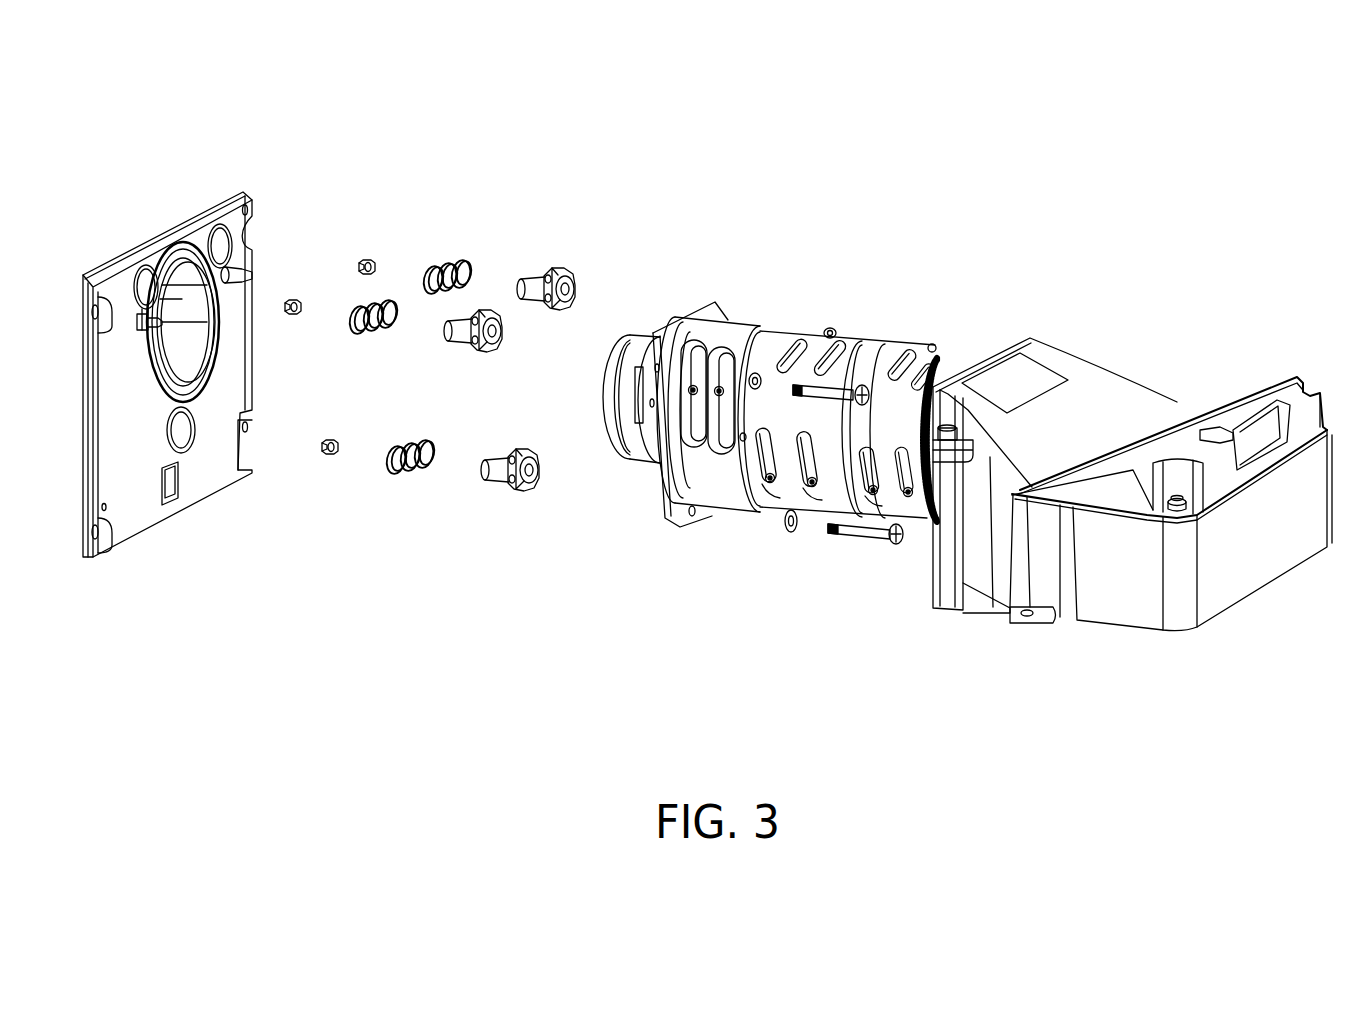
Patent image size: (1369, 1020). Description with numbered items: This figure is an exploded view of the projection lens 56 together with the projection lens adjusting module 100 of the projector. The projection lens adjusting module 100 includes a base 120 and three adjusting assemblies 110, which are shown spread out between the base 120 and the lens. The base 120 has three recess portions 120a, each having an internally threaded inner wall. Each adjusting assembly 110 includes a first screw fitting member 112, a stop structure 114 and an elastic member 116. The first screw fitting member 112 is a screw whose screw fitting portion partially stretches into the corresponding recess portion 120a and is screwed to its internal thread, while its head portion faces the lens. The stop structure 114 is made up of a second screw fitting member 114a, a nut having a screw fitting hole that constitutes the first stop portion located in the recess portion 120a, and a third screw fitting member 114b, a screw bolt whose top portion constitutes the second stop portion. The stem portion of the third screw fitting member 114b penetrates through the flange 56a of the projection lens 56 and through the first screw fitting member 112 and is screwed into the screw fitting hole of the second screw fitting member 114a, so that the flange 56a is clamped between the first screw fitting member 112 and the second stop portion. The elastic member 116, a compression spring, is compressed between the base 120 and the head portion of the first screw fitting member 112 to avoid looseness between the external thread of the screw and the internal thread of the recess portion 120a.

The projection lens adjusting module 100 is at (125, 138).
The base 120 is at (137, 487).
The recess portion 120a is at (222, 248).
The adjusting assembly 110 is at (233, 592).
The elastic member 116 is at (422, 475).
The first screw fitting member 112 is at (498, 472).
The stop structure 114 is at (292, 673).
The second screw fitting member 114a is at (342, 437).
The third screw fitting member 114b is at (867, 532).
The projection lens 56 is at (856, 350).
The flange 56a is at (689, 515).